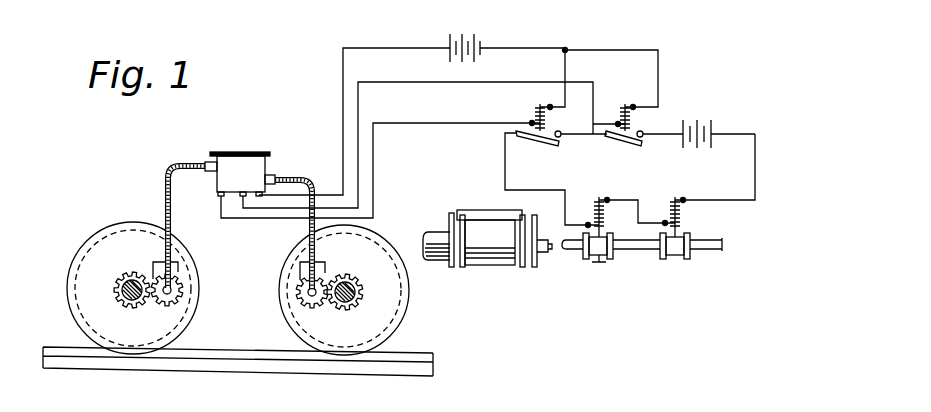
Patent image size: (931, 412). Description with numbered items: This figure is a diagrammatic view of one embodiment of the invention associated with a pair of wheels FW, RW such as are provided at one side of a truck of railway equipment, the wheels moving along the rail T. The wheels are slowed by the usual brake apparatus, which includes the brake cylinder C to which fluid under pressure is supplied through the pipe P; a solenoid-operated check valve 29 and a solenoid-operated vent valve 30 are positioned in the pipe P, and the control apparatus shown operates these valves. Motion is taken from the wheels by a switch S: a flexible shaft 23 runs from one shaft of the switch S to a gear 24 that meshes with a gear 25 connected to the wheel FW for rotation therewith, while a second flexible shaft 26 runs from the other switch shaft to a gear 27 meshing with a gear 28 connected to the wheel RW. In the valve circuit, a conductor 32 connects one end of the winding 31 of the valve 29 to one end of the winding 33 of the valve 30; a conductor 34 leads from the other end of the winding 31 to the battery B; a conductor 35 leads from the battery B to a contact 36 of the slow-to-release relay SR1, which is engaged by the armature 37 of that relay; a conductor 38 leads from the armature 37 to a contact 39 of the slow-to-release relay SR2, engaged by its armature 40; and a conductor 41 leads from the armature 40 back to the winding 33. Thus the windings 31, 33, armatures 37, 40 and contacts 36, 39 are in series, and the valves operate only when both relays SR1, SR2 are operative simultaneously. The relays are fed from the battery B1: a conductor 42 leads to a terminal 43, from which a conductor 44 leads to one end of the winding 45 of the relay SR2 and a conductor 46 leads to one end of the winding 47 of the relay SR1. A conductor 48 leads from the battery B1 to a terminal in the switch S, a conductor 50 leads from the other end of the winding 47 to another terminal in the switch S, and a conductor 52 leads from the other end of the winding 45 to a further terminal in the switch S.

The rail T is at (217, 360).
The wheel FW is at (98, 240).
The wheel RW is at (375, 240).
The switch S is at (246, 154).
The flexible shaft 23 is at (168, 186).
The gear 24 is at (170, 306).
The gear 25 is at (127, 305).
The flexible shaft 26 is at (306, 182).
The gear 27 is at (305, 308).
The gear 28 is at (355, 300).
The solenoid-operated check valve 29 is at (676, 258).
The solenoid-operated vent valve 30 is at (604, 262).
The winding 31 is at (682, 212).
The conductor 32 is at (634, 200).
The winding 33 is at (595, 198).
The conductor 34 is at (716, 200).
The conductor 35 is at (668, 136).
The contact 36 is at (643, 131).
The armature 37 is at (630, 146).
The conductor 38 is at (582, 136).
The contact 39 is at (560, 131).
The armature 40 is at (553, 146).
The conductor 41 is at (505, 162).
The conductor 42 is at (534, 44).
The terminal 43 is at (566, 50).
The conductor 44 is at (565, 68).
The winding 45 is at (533, 116).
The conductor 46 is at (636, 51).
The winding 47 is at (620, 115).
The conductor 48 is at (383, 37).
The conductor 50 is at (418, 82).
The conductor 52 is at (440, 123).
The battery B is at (717, 125).
The battery B1 is at (469, 36).
The slow-to-release relay SR1 is at (625, 104).
The slow-to-release relay SR2 is at (540, 106).
The brake cylinder C is at (484, 210).
The pipe P is at (712, 250).